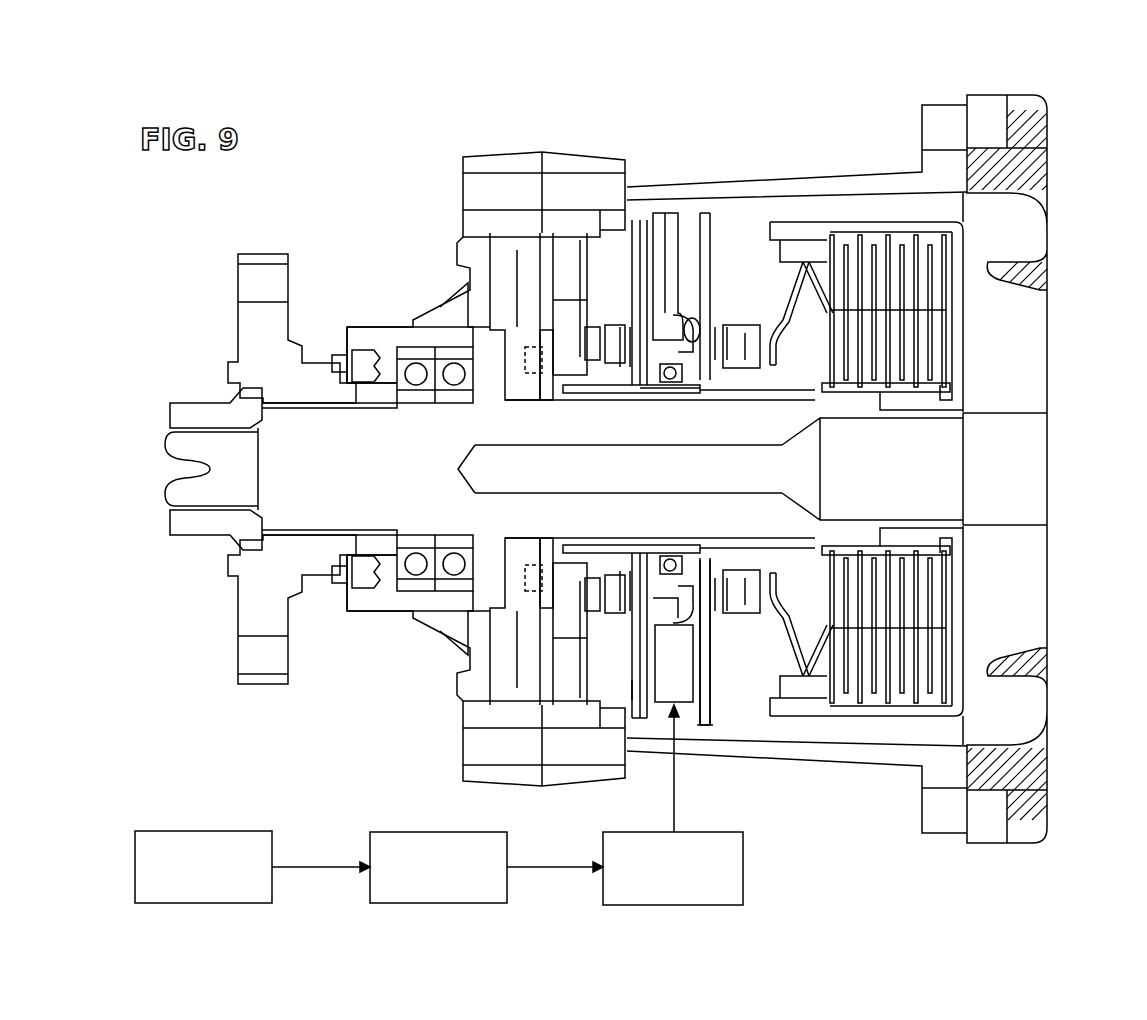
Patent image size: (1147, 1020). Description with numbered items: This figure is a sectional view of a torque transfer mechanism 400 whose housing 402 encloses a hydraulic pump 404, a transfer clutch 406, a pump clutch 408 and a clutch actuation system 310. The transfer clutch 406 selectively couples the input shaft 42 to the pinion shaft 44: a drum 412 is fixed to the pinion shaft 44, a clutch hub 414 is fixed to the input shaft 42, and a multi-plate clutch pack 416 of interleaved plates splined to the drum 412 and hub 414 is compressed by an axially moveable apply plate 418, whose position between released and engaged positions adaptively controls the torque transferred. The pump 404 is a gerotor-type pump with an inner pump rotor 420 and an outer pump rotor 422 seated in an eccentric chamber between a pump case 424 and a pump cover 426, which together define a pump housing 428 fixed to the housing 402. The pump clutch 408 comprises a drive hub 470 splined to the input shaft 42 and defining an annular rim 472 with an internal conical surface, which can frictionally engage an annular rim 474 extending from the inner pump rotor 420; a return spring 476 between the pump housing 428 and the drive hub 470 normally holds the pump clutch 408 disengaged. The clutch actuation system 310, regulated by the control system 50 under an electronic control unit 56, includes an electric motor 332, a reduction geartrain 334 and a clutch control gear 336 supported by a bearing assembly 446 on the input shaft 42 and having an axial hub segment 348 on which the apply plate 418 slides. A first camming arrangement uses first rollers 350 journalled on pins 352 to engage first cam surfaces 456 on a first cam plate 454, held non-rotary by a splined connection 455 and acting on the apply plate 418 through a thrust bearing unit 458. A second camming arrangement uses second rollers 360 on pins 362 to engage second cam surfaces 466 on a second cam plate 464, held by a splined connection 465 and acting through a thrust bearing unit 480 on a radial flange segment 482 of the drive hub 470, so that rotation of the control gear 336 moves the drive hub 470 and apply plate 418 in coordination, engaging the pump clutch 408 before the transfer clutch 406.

The input shaft 42 is at (303, 447).
The pinion shaft 44 is at (1002, 423).
The control system 50 is at (319, 775).
The electronic control unit (ECU) 56 is at (178, 832).
The clutch actuation system 310 is at (765, 843).
The electric motor 332 is at (393, 832).
The reduction geartrain 334 is at (741, 876).
The clutch control gear 336 is at (662, 245).
The axial hub segment 348 is at (743, 373).
The first rollers 350 is at (692, 330).
The pins 352 is at (664, 240).
The second rollers 360 is at (682, 608).
The pins 362 is at (665, 627).
The torque transfer mechanism 400 is at (858, 84).
The housing 402 is at (480, 157).
The hydraulic pump 404 is at (520, 268).
The transfer clutch 406 is at (828, 205).
The pump clutch 408 is at (583, 410).
The drum 412 is at (958, 313).
The clutch hub 414 is at (910, 392).
The multi-plate clutch pack 416 is at (940, 598).
The apply plate 418 is at (744, 340).
The inner pump rotor 420 is at (550, 372).
The outer pump rotor 422 is at (550, 623).
The pump case 424 is at (556, 702).
The pump cover 426 is at (553, 673).
The pump housing 428 is at (593, 232).
The bearing assembly 446 is at (672, 382).
The first cam plate 454 is at (707, 703).
The splined connection 455 is at (703, 733).
The first cam surfaces 456 is at (688, 335).
The thrust bearing unit 458 is at (718, 362).
The second cam plate 464 is at (637, 693).
The splined connection 465 is at (637, 733).
The second cam surfaces 466 is at (645, 617).
The drive hub 470 is at (628, 382).
The annular rim 472 is at (600, 548).
The annular rim 474 is at (568, 553).
The return spring 476 is at (592, 327).
The thrust bearing unit 480 is at (627, 587).
The radial flange segment 482 is at (613, 327).